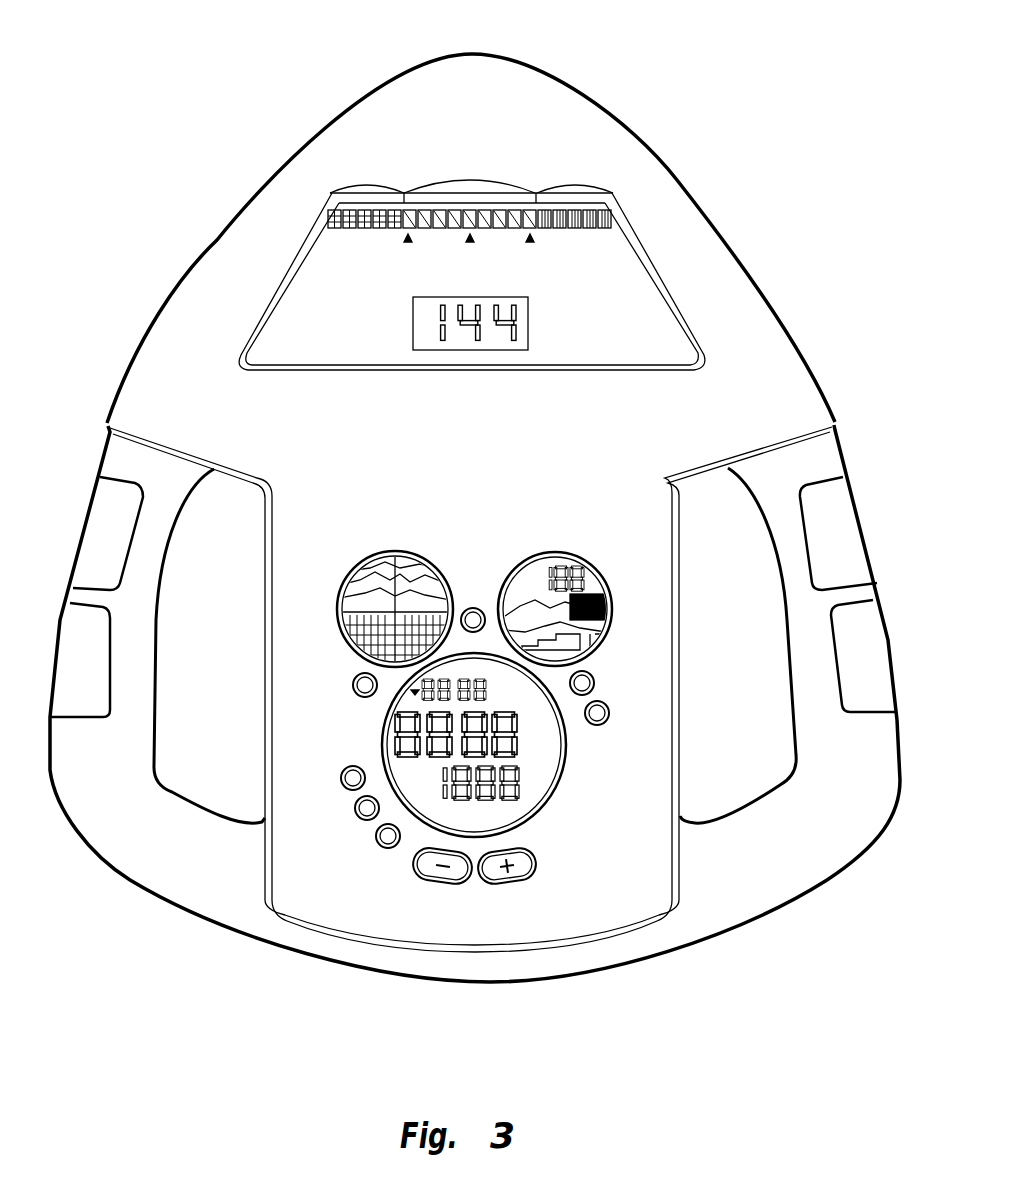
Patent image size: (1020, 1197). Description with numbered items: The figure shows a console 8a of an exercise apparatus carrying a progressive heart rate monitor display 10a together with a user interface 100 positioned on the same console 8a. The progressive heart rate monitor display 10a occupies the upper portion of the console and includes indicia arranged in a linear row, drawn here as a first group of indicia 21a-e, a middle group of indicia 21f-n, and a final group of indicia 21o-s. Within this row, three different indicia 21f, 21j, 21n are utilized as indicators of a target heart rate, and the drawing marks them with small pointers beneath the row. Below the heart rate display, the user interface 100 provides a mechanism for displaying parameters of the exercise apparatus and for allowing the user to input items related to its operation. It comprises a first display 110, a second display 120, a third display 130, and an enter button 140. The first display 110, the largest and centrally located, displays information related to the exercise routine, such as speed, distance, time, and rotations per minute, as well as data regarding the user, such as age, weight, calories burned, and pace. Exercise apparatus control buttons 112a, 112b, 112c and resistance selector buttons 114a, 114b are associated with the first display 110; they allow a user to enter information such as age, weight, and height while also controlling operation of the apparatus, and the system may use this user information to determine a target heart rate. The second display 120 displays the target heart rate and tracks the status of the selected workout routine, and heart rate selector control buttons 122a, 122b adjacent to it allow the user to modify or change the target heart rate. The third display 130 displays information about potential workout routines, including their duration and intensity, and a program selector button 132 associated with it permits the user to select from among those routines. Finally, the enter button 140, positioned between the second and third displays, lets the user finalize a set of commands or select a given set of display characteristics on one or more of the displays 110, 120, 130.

The console 8a is at (187, 233).
The progressive heart rate monitor display 10a is at (838, 377).
The indicia 21a-e is at (366, 184).
The indicia 21f-n is at (470, 184).
The indicia 21o-s is at (574, 182).
The indicium 21f is at (410, 232).
The indicium 21j is at (462, 232).
The indicium 21n is at (530, 232).
The user interface 100 is at (545, 893).
The first display 110 is at (566, 757).
The exercise apparatus control button 112a is at (341, 778).
The exercise apparatus control button 112b is at (357, 817).
The exercise apparatus control button 112c is at (381, 848).
The resistance selector button 114a is at (440, 883).
The resistance selector button 114b is at (520, 887).
The second display 120 is at (560, 553).
The heart rate selector control button 122a is at (594, 680).
The heart rate selector control button 122b is at (609, 710).
The third display 130 is at (386, 554).
The program selector button 132 is at (353, 683).
The enter button 140 is at (472, 607).